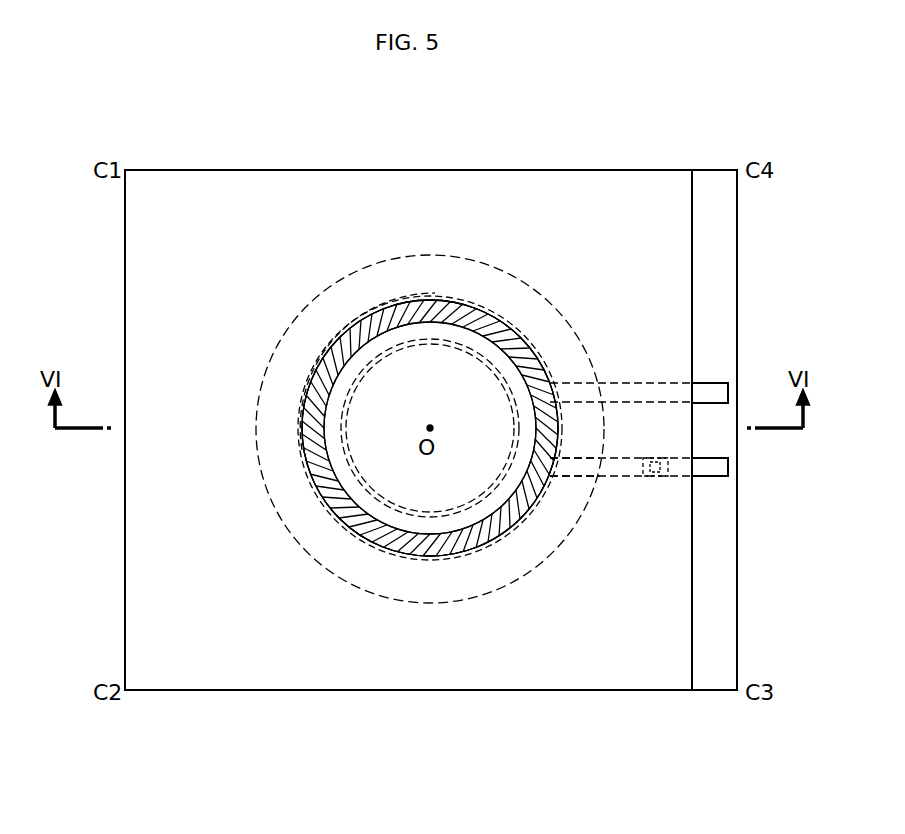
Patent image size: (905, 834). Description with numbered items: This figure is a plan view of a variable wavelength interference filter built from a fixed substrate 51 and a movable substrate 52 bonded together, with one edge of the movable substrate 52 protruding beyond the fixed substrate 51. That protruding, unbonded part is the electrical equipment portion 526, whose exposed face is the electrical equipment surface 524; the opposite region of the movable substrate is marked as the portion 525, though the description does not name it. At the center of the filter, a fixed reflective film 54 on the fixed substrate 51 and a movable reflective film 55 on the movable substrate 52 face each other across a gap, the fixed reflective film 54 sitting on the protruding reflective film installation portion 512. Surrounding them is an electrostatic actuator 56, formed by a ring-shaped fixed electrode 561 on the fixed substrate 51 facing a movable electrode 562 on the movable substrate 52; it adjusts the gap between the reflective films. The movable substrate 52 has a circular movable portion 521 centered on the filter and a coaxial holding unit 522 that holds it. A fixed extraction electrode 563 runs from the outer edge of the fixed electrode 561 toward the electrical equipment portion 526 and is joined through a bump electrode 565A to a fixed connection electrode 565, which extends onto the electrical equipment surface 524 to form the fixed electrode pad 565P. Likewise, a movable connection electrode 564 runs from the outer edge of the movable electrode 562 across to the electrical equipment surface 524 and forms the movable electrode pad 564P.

The fixed substrate 51 is at (125, 248).
The movable substrate 52 is at (722, 213).
The fixed reflective film 54 is at (335, 520).
The movable reflective film 55 is at (367, 371).
The electrostatic actuator 56 is at (465, 553).
The reflective film installation portion 512 is at (383, 550).
The movable portion 521 is at (397, 302).
The holding unit 522 is at (507, 300).
The electrical equipment surface 524 is at (722, 633).
The top edge 525 is at (612, 182).
The electrical equipment portion 526 is at (737, 670).
The fixed electrode 561 is at (430, 428).
The movable electrode 562 is at (430, 428).
The fixed extraction electrode 563 is at (578, 478).
The movable connection electrode 564 is at (570, 386).
The movable electrode pad 564P is at (722, 393).
The fixed connection electrode 565 is at (665, 478).
The bump electrode 565A is at (655, 478).
The fixed electrode pad 565P is at (722, 467).